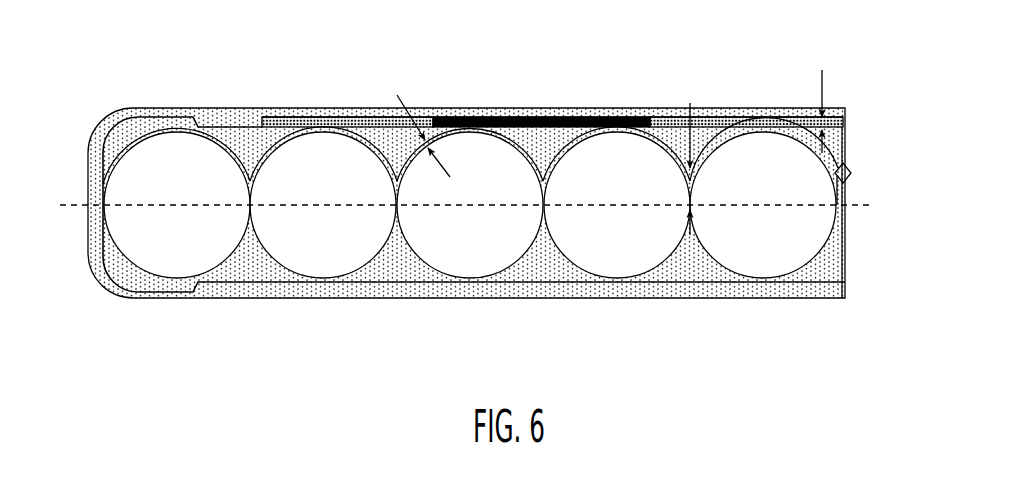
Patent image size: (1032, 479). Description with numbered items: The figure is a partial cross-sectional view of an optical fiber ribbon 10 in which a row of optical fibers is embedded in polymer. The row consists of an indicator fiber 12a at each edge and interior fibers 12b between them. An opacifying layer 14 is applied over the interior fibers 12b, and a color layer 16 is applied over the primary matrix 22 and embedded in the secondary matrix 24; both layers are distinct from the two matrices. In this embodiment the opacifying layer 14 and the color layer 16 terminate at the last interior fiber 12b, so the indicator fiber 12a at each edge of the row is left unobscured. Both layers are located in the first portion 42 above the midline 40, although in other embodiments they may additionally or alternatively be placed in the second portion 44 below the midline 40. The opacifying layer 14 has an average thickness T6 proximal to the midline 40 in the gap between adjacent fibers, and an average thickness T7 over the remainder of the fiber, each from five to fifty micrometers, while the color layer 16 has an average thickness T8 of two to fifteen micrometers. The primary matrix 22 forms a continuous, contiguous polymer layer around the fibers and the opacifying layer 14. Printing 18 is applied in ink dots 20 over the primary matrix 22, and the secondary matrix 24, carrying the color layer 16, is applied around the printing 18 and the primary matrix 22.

The illumination assembly 10 is at (122, 78).
The indicator fiber 12a is at (165, 243).
The interior fiber 12b is at (278, 248).
The opacifying layer 14 is at (542, 150).
The color layer 16 is at (305, 125).
The printing 18 is at (617, 113).
The ink dots 20 is at (458, 117).
The primary matrix 22 is at (403, 267).
The secondary matrix 24 is at (787, 288).
The midline 40 is at (77, 205).
The first portion 42 is at (863, 168).
The second portion 44 is at (867, 240).
The average thickness T6 is at (417, 121).
The average thickness T7 is at (691, 153).
The average thickness T8 is at (822, 93).